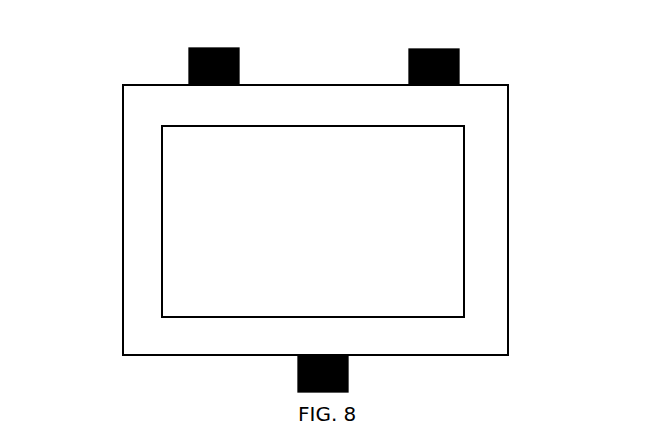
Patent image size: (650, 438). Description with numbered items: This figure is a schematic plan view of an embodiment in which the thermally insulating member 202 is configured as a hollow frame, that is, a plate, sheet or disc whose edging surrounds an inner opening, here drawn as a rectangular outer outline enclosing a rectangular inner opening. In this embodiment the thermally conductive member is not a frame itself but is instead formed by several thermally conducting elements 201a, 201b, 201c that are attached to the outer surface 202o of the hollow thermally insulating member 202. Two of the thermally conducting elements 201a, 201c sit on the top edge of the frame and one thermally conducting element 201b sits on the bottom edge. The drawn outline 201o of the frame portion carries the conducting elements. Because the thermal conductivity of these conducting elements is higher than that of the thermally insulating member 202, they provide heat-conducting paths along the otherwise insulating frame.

The outer edge of substrate 201o is at (487, 356).
The outer surface of the thermally insulating member 202o is at (348, 83).
The thermally insulating member 202 is at (297, 99).
The thermally conducting element 201a is at (459, 77).
The thermally conducting element 201b is at (348, 381).
The thermally conducting element 201c is at (189, 58).